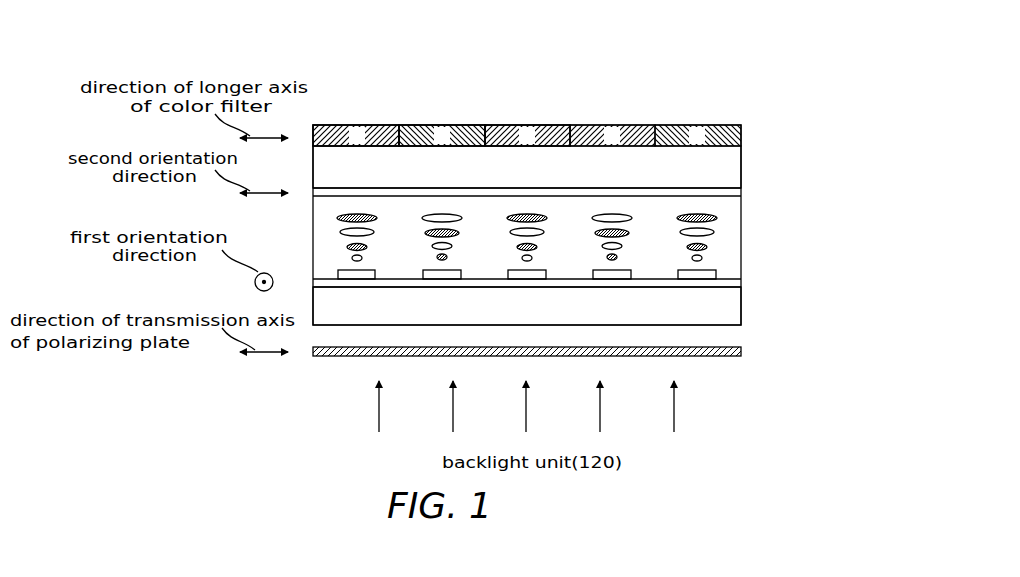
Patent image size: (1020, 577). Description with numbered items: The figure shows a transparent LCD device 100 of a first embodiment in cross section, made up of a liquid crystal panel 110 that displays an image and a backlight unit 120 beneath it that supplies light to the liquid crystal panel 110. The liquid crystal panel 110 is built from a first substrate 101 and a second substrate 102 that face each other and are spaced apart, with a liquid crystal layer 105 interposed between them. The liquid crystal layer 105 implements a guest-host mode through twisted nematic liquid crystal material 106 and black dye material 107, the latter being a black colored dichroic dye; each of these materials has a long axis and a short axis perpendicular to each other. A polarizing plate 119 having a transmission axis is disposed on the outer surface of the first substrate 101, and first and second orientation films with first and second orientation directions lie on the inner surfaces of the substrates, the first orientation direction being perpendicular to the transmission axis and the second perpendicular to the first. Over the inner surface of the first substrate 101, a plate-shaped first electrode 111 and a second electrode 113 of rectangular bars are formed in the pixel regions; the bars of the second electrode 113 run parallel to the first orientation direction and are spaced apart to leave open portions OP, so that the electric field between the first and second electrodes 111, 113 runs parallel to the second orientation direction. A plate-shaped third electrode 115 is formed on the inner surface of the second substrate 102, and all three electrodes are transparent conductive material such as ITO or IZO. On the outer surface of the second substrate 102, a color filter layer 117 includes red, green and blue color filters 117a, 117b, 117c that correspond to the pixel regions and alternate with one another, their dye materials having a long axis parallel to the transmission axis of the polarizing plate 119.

The transparent LCD device 100 is at (771, 60).
The first substrate 101 is at (728, 313).
The second substrate 102 is at (730, 163).
The liquid crystal layer 105 is at (728, 269).
The liquid crystal material 106 is at (720, 232).
The black dye material 107 is at (718, 210).
The liquid crystal panel 110 is at (815, 318).
The first electrode 111 is at (722, 290).
The second electrode 113 is at (720, 255).
The third electrode 115 is at (730, 190).
The color filter layer 117 is at (567, 62).
The red color filter 117a is at (383, 126).
The green color filter 117b is at (462, 126).
The blue color filter 117c is at (550, 126).
The polarizing plate 119 is at (742, 350).
The backlight unit 120 is at (526, 406).
The open portion OP is at (393, 270).